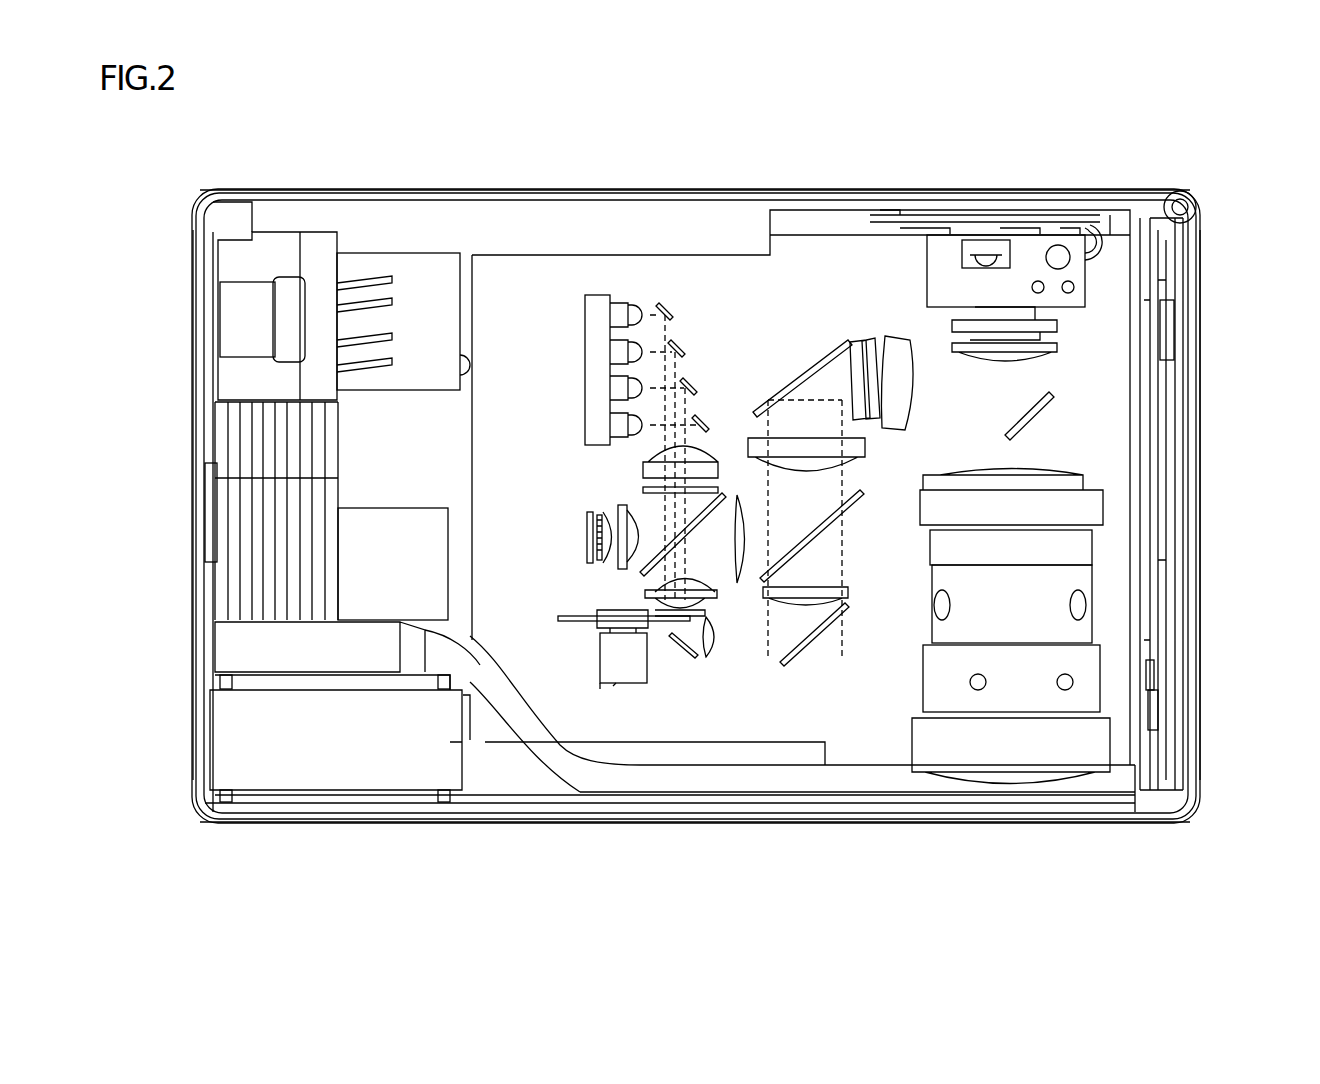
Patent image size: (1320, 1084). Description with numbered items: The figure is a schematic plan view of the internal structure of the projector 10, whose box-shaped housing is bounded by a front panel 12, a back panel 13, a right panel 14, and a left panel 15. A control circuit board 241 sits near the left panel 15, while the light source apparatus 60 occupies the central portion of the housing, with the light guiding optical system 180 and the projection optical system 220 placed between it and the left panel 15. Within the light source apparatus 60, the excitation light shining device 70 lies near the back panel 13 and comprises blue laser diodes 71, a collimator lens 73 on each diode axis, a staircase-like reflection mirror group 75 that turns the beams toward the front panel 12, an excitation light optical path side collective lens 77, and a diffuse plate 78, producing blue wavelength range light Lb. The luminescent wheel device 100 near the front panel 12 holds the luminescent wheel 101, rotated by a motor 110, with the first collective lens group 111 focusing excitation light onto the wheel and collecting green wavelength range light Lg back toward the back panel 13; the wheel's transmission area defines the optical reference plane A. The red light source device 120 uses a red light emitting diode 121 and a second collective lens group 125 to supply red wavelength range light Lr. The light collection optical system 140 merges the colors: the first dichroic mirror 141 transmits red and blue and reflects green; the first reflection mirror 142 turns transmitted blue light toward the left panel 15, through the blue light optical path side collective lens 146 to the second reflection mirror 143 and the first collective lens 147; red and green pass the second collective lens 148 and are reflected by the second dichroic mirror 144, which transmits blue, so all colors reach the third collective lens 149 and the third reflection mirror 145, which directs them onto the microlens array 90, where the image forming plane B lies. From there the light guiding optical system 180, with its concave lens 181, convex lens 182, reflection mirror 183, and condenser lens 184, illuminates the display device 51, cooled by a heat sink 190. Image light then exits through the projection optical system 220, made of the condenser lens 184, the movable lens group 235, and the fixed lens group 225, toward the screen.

The projector 10 is at (1204, 192).
The front panel 12 is at (326, 823).
The back panel 13 is at (310, 188).
The right panel 14 is at (190, 478).
The left panel 15 is at (1202, 520).
The display device 51 is at (1065, 335).
The light source apparatus 60 is at (548, 630).
The excitation light shining device 70 is at (569, 268).
The blue laser diodes 71 is at (622, 305).
The collimator lens 73 is at (636, 305).
The reflection mirror group 75 is at (681, 300).
The excitation light optical path side collective lens 77 is at (706, 450).
The diffuse plate 78 is at (722, 488).
The microlens array 90 is at (862, 345).
The luminescent wheel device 100 is at (628, 700).
The luminescent wheel 101 is at (578, 625).
The motor 110 is at (617, 680).
The first collective lens group 111 is at (640, 612).
The red light source device 120 is at (558, 501).
The red light emitting diode 121 is at (595, 538).
The second collective lens group 125 is at (614, 508).
The light collection optical system 140 is at (805, 605).
The first dichroic mirror 141 is at (795, 475).
The first reflection mirror 142 is at (690, 580).
The second reflection mirror 143 is at (835, 545).
The second dichroic mirror 144 is at (748, 585).
The third reflection mirror 145 is at (800, 352).
The blue light optical path side collective lens 146 is at (686, 660).
The first collective lens 147 is at (835, 640).
The second collective lens 148 is at (800, 380).
The third collective lens 149 is at (858, 460).
The light guiding optical system 180 is at (918, 345).
The concave lens 181 is at (880, 350).
The convex lens 182 is at (935, 345).
The reflection mirror 183 is at (1055, 415).
The condenser lens 184 is at (1060, 352).
The heat sink 190 is at (1020, 250).
The projection optical system 220 is at (1108, 703).
The fixed lens group 225 is at (1040, 740).
The movable lens group 235 is at (1075, 548).
The control circuit board 241 is at (1165, 680).
The optical reference plane A is at (540, 655).
The image forming plane B is at (835, 355).
The red wavelength range light Lr is at (650, 530).
The green wavelength range light Lg is at (725, 555).
The blue wavelength range light Lb is at (900, 605).